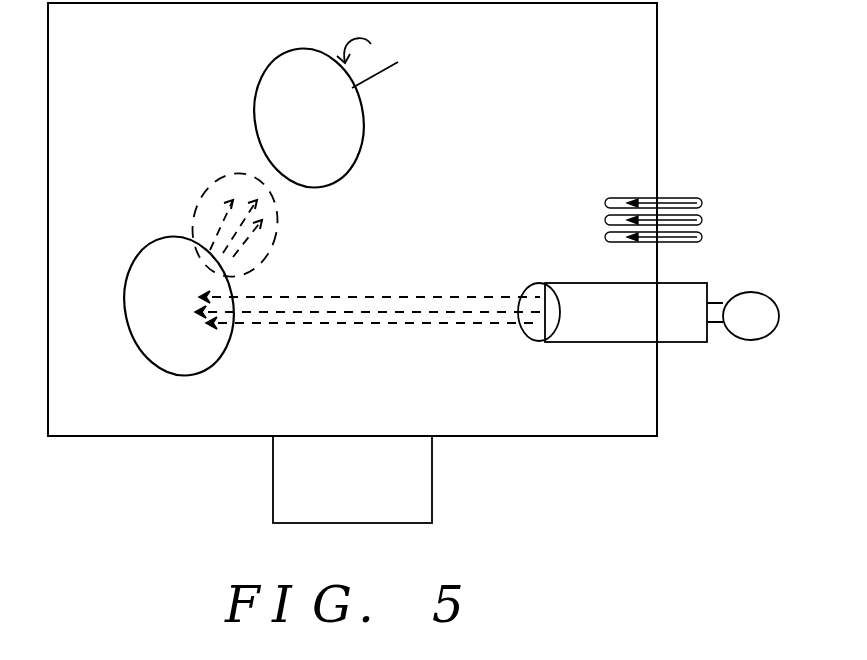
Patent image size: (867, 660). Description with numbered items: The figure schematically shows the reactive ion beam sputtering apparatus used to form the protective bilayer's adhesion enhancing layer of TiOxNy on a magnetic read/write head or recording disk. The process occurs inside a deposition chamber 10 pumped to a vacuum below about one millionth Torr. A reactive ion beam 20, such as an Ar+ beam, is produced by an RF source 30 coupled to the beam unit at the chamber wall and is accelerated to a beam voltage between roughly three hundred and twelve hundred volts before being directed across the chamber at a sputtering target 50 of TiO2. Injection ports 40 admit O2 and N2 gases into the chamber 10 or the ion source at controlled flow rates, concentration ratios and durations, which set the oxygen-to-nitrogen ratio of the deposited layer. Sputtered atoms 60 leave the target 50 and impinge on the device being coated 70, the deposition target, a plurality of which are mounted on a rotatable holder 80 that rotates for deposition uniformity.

The deposition chamber 10 is at (657, 35).
The reactive ion beam 20 is at (430, 297).
The RF source 30 is at (765, 302).
The injection ports 40 is at (692, 199).
The sputtering target 50 is at (149, 253).
The sputtered atoms 60 is at (205, 212).
The device being coated 70 is at (347, 143).
The rotatable holder 80 is at (375, 75).